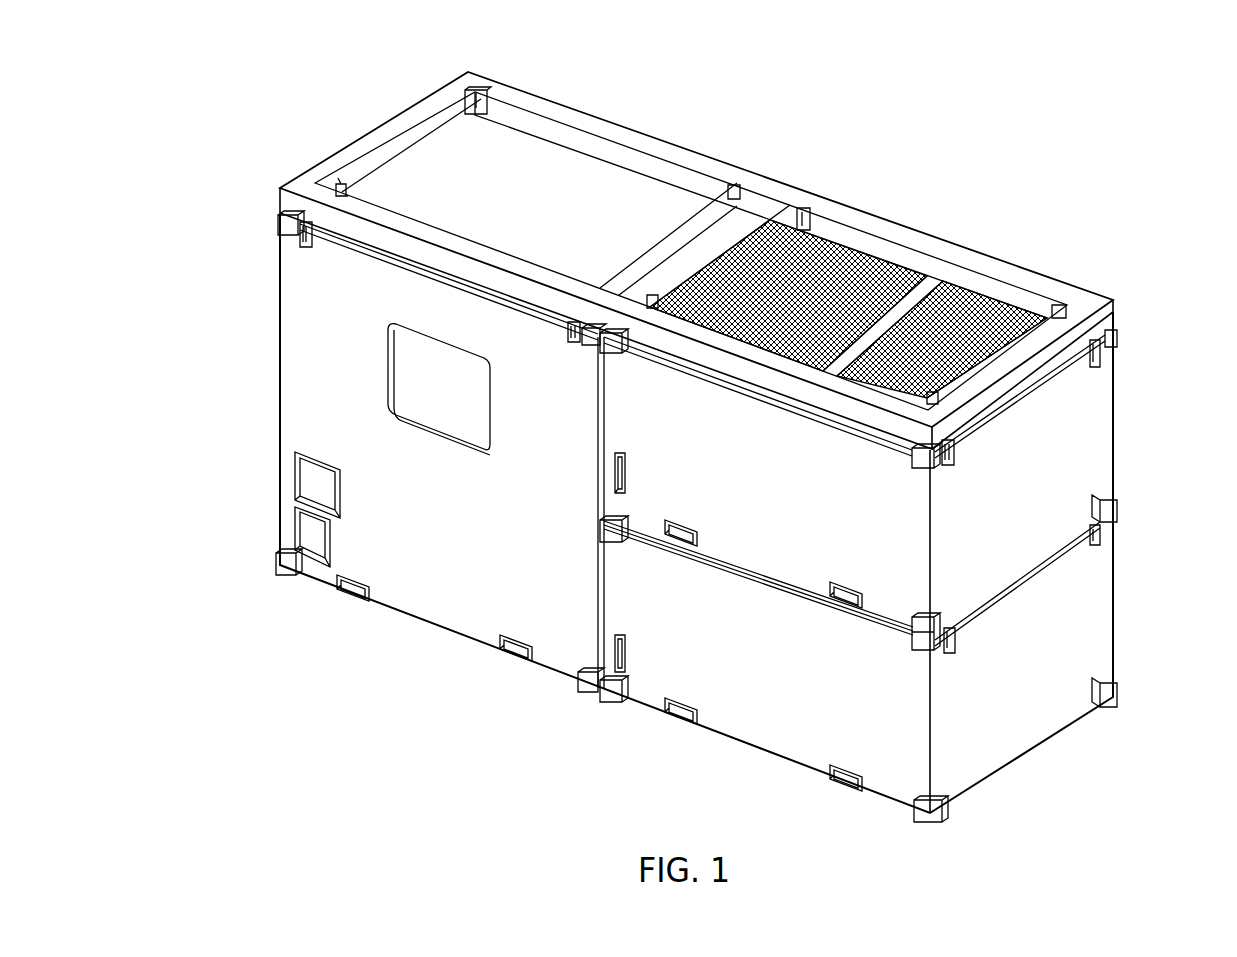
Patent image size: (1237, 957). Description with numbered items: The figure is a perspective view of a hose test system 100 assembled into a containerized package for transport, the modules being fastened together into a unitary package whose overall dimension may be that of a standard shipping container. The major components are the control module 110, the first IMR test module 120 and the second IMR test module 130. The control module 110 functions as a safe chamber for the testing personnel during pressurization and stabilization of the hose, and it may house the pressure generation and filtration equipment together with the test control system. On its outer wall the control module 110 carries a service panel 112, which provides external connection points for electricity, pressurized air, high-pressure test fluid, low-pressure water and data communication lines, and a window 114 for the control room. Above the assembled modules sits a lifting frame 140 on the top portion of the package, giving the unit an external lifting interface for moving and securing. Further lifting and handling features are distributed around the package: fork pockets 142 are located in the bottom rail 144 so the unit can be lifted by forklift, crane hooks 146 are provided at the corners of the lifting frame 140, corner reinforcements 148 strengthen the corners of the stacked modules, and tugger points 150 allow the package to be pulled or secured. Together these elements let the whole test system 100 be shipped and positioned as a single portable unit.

The test system 100 is at (718, 98).
The control module 110 is at (460, 600).
The service panel 112 is at (305, 527).
The window 114 is at (395, 390).
The first IMR test module 120 is at (975, 755).
The second IMR test module 130 is at (1095, 455).
The lifting frame 140 is at (785, 185).
The fork pockets 142 is at (345, 598).
The bottom rail 144 is at (742, 733).
The crane hooks 146 is at (340, 188).
The corner reinforcements 148 is at (922, 818).
The tugger points 150 is at (1115, 695).